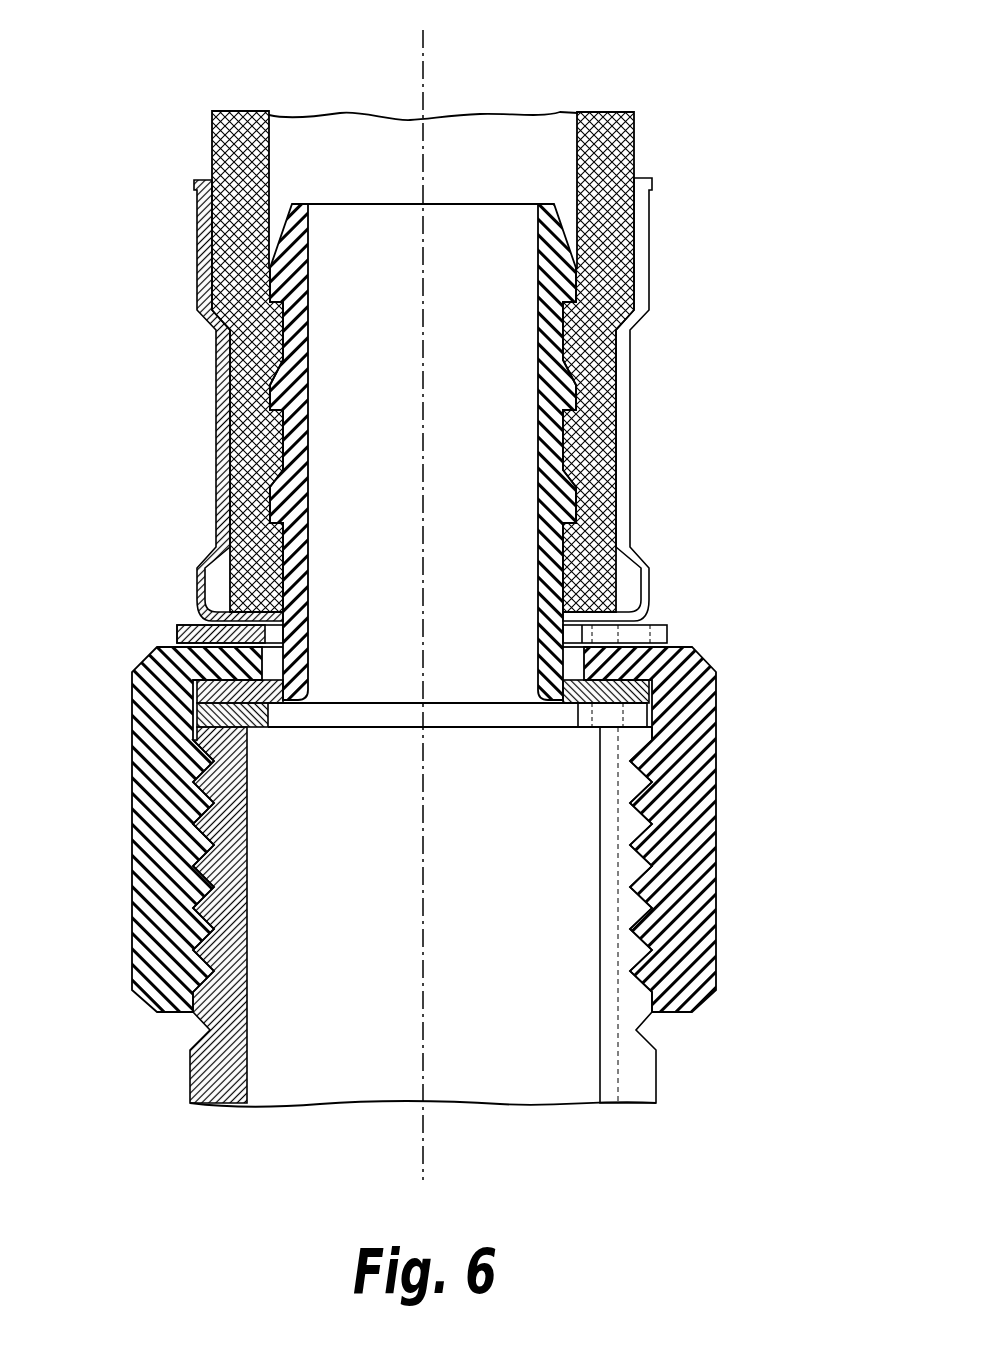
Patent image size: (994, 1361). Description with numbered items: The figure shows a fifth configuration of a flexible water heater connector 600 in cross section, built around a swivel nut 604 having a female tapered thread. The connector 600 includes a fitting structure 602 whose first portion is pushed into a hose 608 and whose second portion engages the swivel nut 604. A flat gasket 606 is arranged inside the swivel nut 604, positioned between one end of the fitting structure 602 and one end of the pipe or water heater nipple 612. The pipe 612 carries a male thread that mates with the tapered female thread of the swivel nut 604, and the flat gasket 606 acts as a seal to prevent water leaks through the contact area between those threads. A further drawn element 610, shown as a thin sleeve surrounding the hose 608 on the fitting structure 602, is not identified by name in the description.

The flexible water heater connector 600 is at (436, 594).
The fitting structure 602 is at (290, 443).
The swivel nut 604 is at (702, 828).
The flat gasket 606 is at (268, 713).
The hose 608 is at (240, 157).
The outer shell 610 is at (630, 373).
The pipe 612 is at (188, 1079).